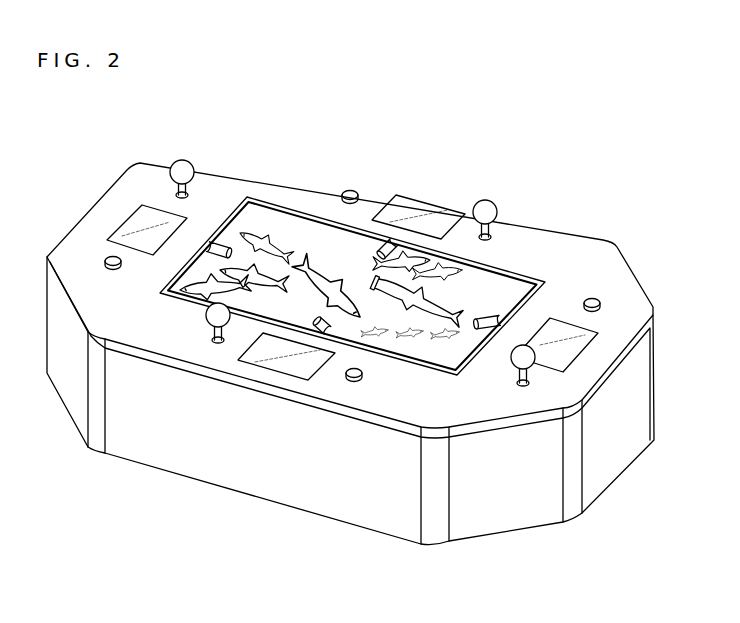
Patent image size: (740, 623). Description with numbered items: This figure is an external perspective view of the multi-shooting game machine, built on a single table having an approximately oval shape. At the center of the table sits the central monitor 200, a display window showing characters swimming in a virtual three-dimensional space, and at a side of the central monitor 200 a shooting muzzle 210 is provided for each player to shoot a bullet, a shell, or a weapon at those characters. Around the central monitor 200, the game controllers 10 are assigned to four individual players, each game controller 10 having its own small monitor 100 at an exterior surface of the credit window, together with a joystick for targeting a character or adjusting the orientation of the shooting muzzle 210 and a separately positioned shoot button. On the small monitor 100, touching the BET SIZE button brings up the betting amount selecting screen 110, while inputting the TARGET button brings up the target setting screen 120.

The game controller 10 is at (493, 399).
The small monitor 100 is at (276, 369).
The betting amount selecting screen 110 is at (210, 311).
The target setting screen 120 is at (358, 380).
The central monitor 200 is at (295, 230).
The shooting muzzle 210 is at (333, 331).